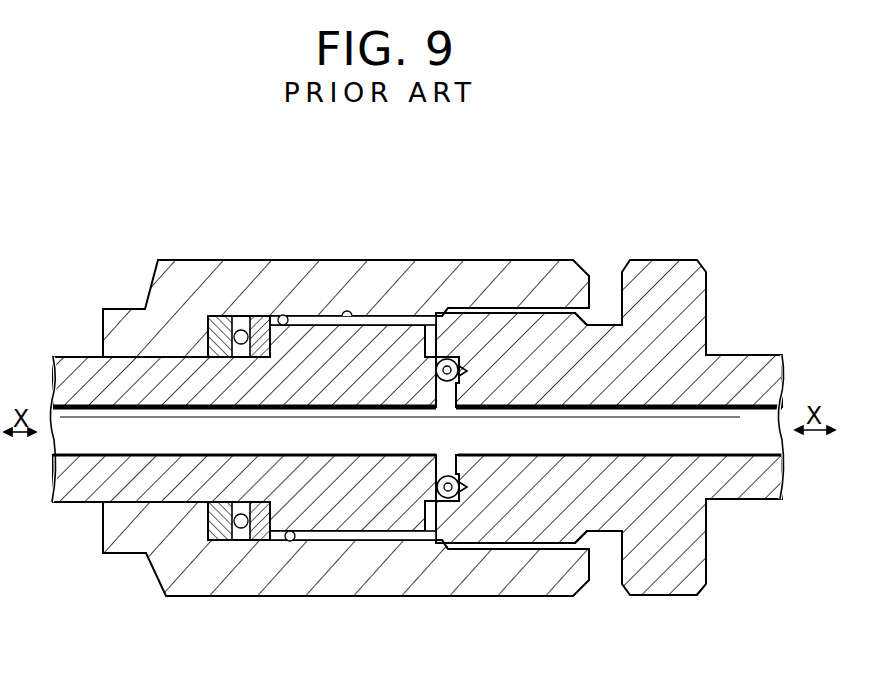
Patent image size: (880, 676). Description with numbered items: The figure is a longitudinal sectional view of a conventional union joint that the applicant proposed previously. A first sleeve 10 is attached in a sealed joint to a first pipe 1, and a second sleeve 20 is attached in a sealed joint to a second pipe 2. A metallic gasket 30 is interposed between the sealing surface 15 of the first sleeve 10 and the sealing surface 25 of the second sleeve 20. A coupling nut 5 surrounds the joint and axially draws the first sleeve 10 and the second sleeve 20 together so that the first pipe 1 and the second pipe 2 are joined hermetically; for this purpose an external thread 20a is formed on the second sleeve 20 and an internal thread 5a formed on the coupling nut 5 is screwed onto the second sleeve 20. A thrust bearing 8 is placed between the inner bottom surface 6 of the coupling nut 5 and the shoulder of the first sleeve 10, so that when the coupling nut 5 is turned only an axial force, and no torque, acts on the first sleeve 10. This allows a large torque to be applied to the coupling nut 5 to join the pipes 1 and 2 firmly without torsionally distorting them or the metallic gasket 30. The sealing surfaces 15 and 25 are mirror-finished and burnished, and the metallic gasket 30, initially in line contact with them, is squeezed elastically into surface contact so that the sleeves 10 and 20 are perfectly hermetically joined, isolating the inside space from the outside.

The first pipe 1 is at (74, 354).
The second pipe 2 is at (659, 250).
The coupling nut 5 is at (332, 260).
The internal thread 5a is at (449, 308).
The inner bottom surface 6 is at (352, 316).
The thrust bearing 8 is at (253, 316).
The first sleeve 10 is at (303, 316).
The sealing surface 15 is at (437, 492).
The second sleeve 20 is at (598, 323).
The external thread 20a is at (515, 310).
The sealing surface 25 is at (463, 480).
The metallic gasket 30 is at (463, 371).